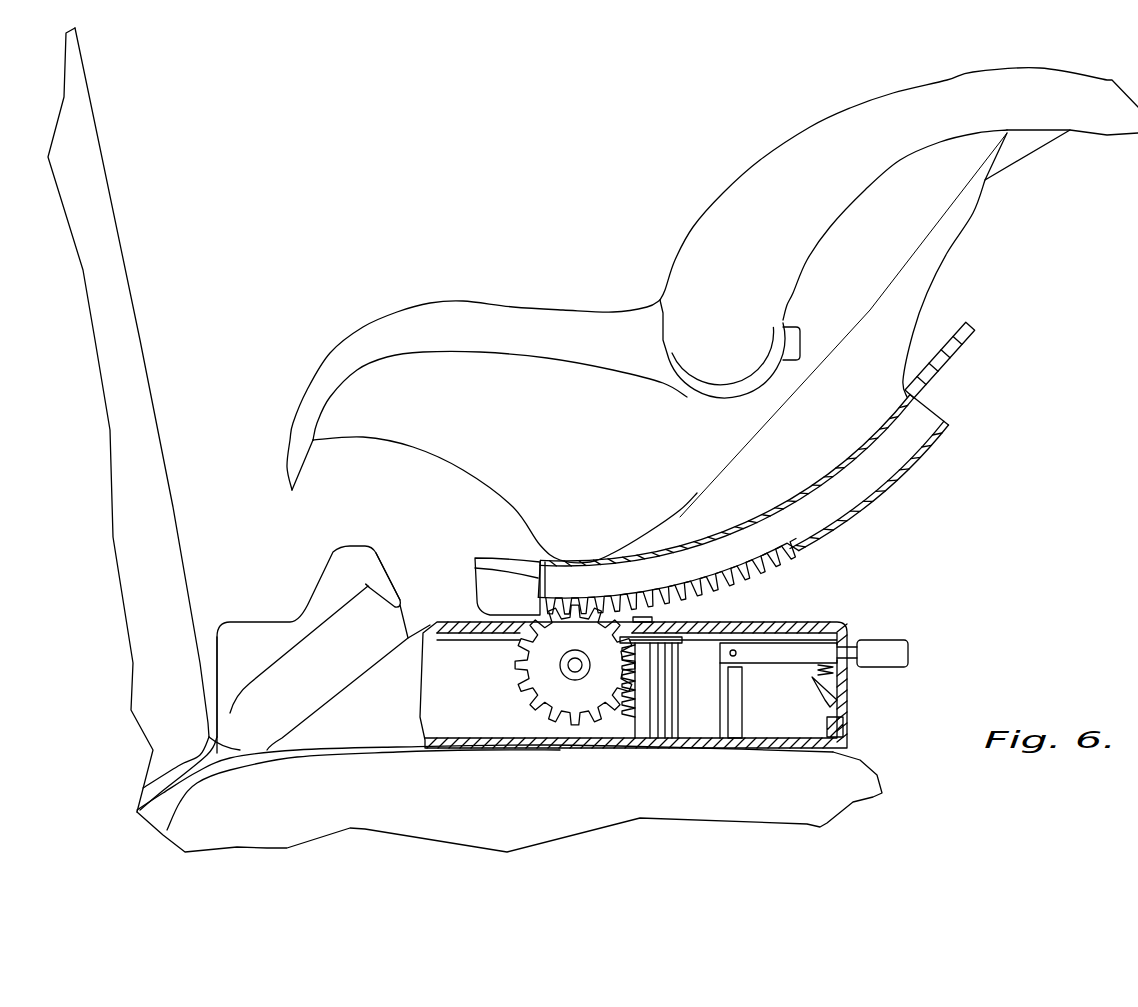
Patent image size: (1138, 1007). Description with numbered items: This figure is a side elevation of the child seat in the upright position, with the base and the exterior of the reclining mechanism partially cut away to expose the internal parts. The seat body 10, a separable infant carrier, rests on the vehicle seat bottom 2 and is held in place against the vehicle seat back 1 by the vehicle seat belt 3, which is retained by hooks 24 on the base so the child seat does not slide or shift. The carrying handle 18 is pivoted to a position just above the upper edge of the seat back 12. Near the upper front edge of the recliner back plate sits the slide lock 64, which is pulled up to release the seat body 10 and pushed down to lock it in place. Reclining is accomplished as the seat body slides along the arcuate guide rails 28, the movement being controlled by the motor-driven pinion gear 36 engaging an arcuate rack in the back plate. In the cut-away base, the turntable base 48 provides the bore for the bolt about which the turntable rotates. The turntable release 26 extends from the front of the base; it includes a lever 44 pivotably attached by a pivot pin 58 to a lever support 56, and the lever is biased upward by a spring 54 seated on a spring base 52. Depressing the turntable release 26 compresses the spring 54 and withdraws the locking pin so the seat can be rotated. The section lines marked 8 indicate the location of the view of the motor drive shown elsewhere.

The vehicle seat back 1 is at (127, 302).
The vehicle seat bottom 2 is at (870, 787).
The vehicle seat belt 3 is at (347, 657).
The section line 8- 8 is at (688, 540).
The seat body 10 is at (551, 300).
The seat back 12 is at (792, 448).
The carrying handle 18 is at (990, 87).
The hooks 24 is at (388, 583).
The turntable release 26 is at (913, 647).
The arcuate guide rails 28 is at (502, 568).
The pinion gear 36 is at (537, 678).
The lever 44 is at (803, 657).
The turntable base 48 is at (615, 728).
The spring base 52 is at (830, 693).
The spring 54 is at (833, 673).
The lever support 56 is at (740, 725).
The pivot pin 58 is at (730, 655).
The slide lock 64 is at (972, 328).